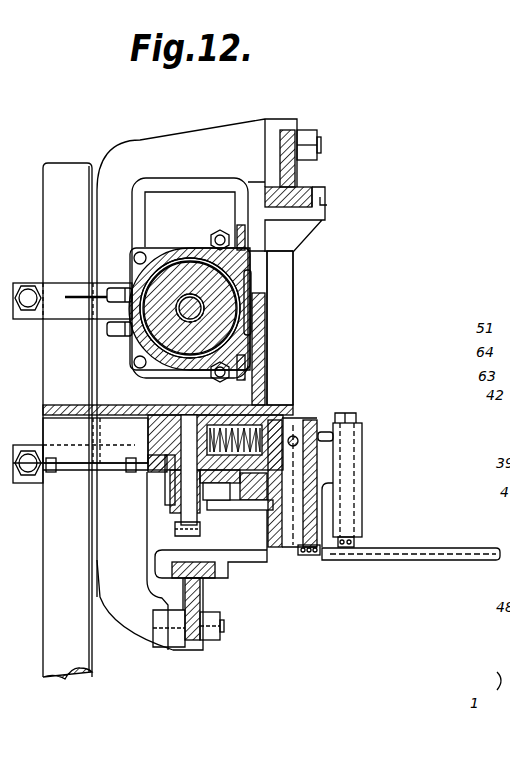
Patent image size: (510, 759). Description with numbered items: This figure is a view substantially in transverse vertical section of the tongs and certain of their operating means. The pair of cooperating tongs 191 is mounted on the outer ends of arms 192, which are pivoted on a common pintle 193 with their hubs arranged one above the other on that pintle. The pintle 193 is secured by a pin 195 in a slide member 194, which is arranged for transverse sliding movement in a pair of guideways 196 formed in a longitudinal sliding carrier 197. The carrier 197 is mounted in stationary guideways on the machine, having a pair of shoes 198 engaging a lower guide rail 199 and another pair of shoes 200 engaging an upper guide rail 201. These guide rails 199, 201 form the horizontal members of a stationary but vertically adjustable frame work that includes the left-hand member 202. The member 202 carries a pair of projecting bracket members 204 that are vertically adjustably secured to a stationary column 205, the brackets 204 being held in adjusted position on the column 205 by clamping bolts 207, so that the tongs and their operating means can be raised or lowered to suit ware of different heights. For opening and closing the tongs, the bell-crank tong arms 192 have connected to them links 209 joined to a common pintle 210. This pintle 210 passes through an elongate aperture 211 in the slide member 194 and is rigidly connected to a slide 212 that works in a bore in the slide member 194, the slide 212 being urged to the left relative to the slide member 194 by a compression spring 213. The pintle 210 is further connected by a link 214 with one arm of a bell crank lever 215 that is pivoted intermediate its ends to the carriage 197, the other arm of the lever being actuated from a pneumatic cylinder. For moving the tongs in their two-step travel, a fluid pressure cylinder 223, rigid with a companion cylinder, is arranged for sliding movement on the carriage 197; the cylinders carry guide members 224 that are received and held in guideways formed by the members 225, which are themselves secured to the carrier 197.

The tongs 191 is at (460, 551).
The arms 192 is at (397, 559).
The pintle 193 is at (300, 541).
The slide member 194 is at (322, 432).
The pin 195 is at (294, 438).
The guideways 196 is at (65, 467).
The carrier 197 is at (278, 273).
The shoes 198 is at (212, 581).
The lower guide rail 199 is at (225, 618).
The shoes 200 is at (327, 203).
The upper guide rail 201 is at (305, 195).
The frame member 202 is at (113, 606).
The bracket members 204 is at (52, 308).
The stationary column 205 is at (57, 175).
The clamping bolts 207 is at (30, 296).
The links 209 is at (228, 505).
The pintle 210 is at (200, 496).
The elongate aperture 211 is at (170, 462).
The slide 212 is at (167, 433).
The compression spring 213 is at (237, 428).
The link 214 is at (183, 504).
The bell crank lever 215 is at (216, 491).
The fluid pressure cylinder 223 is at (182, 250).
The guide members 224 is at (298, 248).
The members 225 is at (240, 228).